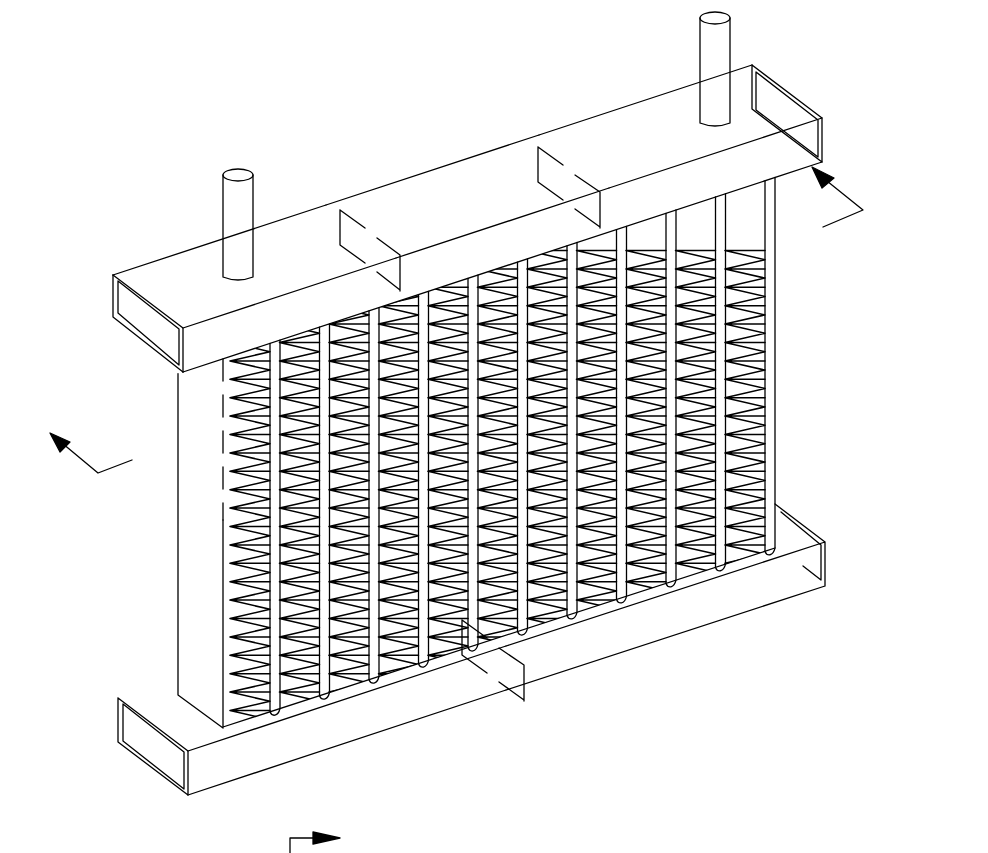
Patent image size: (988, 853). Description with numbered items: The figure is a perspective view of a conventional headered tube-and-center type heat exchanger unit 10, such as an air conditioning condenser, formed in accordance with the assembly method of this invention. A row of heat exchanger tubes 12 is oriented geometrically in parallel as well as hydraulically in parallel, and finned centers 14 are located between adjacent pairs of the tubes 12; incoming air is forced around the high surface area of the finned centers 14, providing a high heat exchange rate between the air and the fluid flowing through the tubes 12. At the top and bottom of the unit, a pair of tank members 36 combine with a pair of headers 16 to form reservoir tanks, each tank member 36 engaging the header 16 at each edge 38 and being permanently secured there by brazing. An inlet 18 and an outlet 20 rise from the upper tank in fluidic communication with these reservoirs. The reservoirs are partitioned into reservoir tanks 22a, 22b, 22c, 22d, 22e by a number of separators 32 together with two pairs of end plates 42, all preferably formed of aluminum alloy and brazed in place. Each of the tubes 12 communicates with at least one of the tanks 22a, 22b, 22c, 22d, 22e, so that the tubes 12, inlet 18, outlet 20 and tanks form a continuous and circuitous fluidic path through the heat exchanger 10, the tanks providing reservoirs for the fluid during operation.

The heat exchanger unit 10 is at (272, 170).
The heat exchanger tubes 12 is at (728, 402).
The finned centers 14 is at (760, 300).
The headers 16 is at (465, 431).
The inlet 18 is at (233, 200).
The outlet 20 is at (725, 56).
The reservoir tank 22a is at (305, 238).
The reservoir tank 22b is at (380, 705).
The reservoir tank 22c is at (460, 180).
The reservoir tank 22d is at (655, 630).
The reservoir tank 22e is at (608, 128).
The separators 32 is at (372, 228).
The tank members 36 is at (170, 258).
The edge 38 is at (115, 318).
The end plates 42 is at (140, 328).